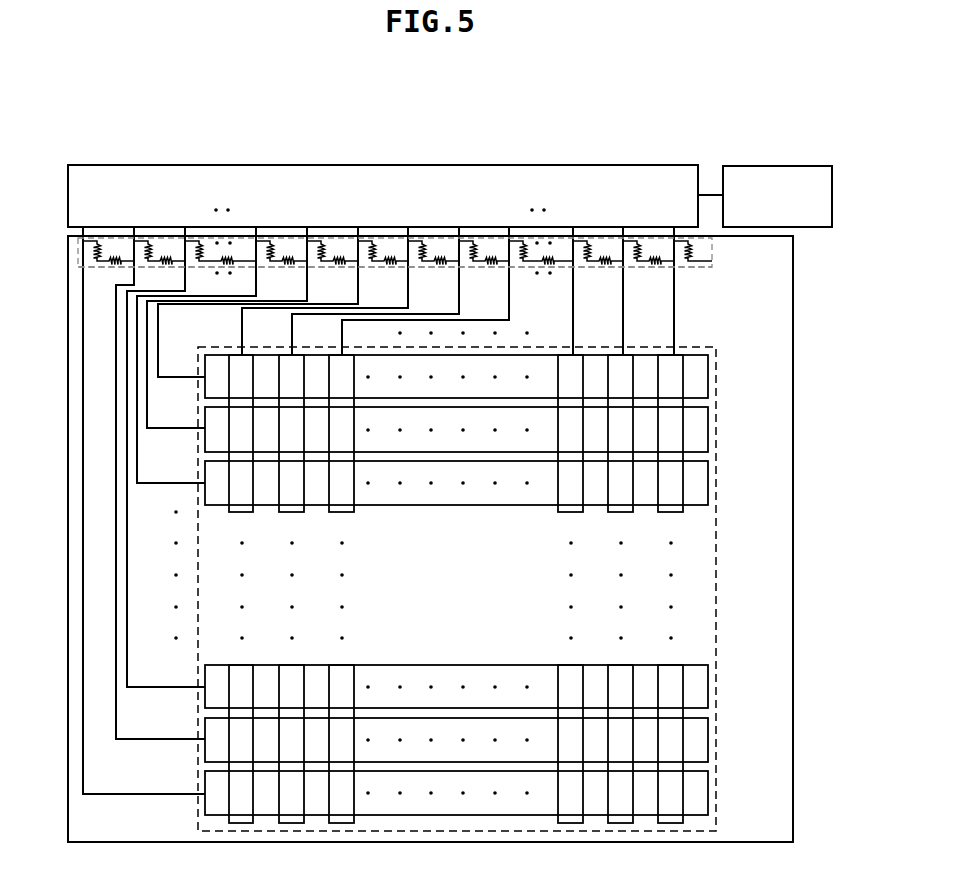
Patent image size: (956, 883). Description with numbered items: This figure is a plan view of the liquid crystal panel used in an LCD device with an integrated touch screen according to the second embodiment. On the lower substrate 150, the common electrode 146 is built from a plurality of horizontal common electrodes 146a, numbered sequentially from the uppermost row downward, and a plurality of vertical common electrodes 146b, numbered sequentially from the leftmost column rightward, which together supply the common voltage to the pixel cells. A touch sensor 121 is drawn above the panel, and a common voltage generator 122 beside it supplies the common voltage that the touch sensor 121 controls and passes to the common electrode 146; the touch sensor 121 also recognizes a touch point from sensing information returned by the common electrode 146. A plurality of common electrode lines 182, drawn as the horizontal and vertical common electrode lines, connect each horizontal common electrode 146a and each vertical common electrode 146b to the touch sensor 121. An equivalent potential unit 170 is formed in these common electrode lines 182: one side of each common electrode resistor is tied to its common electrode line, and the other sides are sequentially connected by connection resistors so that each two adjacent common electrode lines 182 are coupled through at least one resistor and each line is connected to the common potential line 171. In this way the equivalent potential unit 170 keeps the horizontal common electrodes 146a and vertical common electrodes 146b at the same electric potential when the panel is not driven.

The touch sensor 121 is at (673, 164).
The common voltage generator 122 is at (778, 164).
The lower substrate 150 is at (793, 413).
The equivalent potential unit 170 is at (700, 251).
The common potential line 171 is at (700, 267).
The common electrode lines 182 is at (673, 316).
The common electrode 146 is at (716, 413).
The horizontal common electrodes 146a is at (208, 395).
The vertical common electrodes 146b is at (238, 447).